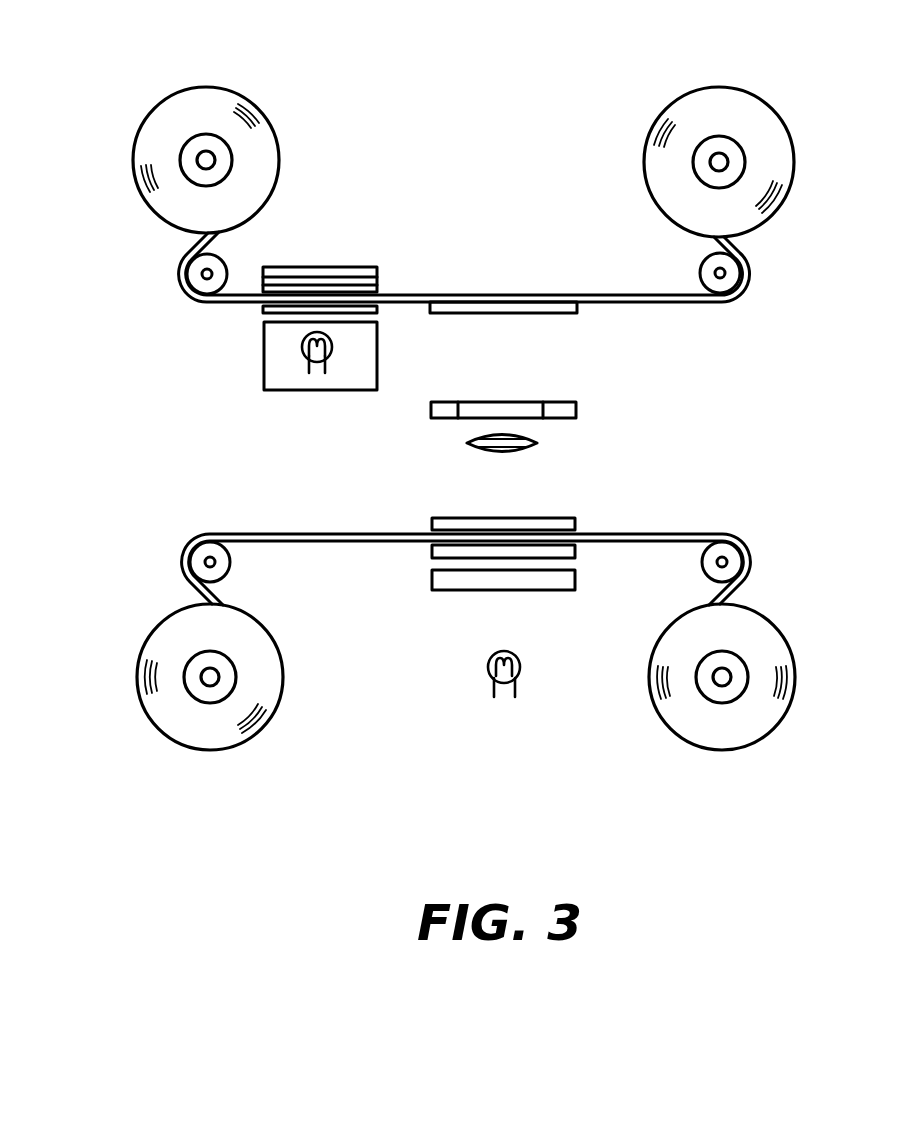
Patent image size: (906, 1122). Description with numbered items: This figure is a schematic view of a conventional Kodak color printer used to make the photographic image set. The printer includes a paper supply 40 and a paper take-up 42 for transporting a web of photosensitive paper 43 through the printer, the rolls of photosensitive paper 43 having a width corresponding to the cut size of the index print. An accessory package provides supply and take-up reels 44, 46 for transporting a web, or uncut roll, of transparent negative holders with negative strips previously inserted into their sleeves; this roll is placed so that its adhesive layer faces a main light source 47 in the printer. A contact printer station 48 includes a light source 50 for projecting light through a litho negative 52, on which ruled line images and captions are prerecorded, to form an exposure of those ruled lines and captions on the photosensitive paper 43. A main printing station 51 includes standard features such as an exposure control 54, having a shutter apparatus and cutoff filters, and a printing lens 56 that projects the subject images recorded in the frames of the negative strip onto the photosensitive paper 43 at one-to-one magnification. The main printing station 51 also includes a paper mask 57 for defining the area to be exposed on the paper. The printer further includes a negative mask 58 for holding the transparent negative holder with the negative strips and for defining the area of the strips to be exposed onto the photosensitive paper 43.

The paper supply 40 is at (188, 108).
The paper take-up 42 is at (697, 106).
The photosensitive paper 43 is at (640, 295).
The supply reel 44 is at (138, 678).
The take-up reel 46 is at (673, 722).
The main light source 47 is at (488, 665).
The contact printer station 48 is at (243, 381).
The light source 50 is at (305, 340).
The main printing station 51 is at (503, 714).
The litho negative 52 is at (263, 312).
The exposure control 54 is at (472, 402).
The printing lens 56 is at (537, 443).
The paper mask 57 is at (555, 313).
The negative mask 58 is at (408, 510).